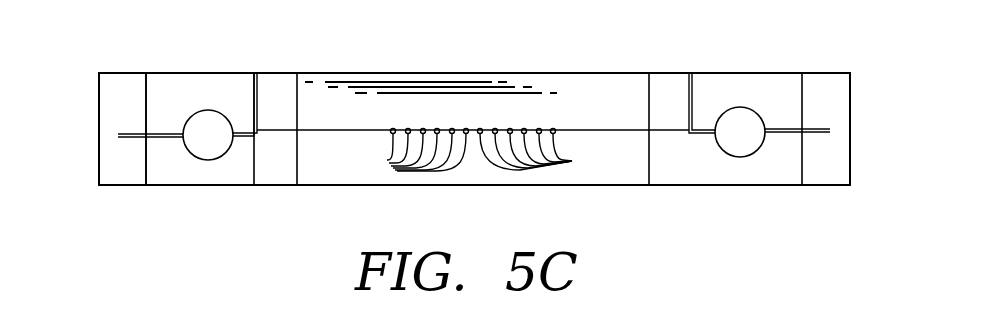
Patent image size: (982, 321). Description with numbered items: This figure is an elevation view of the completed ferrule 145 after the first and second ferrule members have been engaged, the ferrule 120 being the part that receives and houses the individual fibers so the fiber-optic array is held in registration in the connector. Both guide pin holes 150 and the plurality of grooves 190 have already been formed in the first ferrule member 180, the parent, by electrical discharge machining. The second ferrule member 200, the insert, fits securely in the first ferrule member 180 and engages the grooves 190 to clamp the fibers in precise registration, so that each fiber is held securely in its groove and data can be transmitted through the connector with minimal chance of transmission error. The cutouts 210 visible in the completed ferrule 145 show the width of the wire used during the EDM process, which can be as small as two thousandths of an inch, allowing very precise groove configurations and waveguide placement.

The completed ferrule 145 is at (99, 156).
The guide pin hole 150 is at (213, 147).
The first ferrule member 180 is at (175, 73).
The ferrule 120 is at (257, 73).
The second ferrule member 200 is at (483, 73).
The cutouts 210 is at (689, 73).
The grooves 190 is at (391, 168).